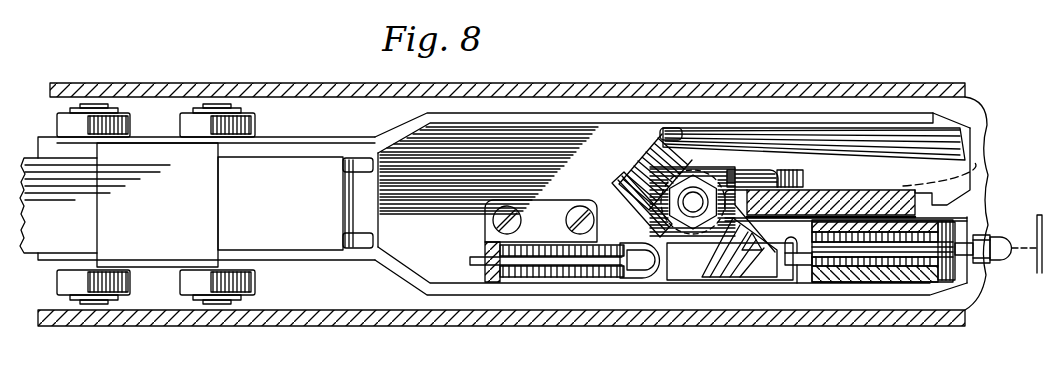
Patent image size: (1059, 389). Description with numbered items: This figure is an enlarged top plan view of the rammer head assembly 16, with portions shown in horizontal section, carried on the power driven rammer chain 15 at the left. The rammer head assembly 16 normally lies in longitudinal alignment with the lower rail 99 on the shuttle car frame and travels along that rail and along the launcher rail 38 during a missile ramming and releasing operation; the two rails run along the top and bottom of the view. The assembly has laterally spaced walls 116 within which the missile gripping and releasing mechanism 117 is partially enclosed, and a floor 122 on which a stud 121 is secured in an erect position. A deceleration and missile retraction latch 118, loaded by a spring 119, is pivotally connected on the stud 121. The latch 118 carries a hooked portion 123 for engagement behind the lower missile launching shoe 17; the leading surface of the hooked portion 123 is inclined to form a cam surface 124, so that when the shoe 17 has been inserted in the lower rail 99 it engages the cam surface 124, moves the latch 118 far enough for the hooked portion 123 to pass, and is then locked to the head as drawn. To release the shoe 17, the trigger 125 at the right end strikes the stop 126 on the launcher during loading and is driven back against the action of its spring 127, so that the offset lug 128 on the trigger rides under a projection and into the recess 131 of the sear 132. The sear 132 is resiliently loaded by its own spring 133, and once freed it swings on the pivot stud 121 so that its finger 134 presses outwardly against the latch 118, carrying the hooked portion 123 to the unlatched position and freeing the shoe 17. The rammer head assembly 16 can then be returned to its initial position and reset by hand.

The launcher rail 38 is at (263, 82).
The lower rail 99 is at (362, 328).
The rammer chain 15 is at (163, 270).
The laterally spaced walls 116 is at (507, 117).
The rammer head assembly 16 is at (658, 300).
The floor 122 is at (527, 182).
The spring 133 is at (570, 273).
The missile gripping and releasing mechanism 117 is at (627, 158).
The spring 119 is at (640, 152).
The stud 121 is at (698, 194).
The deceleration and missile retraction latch 118 is at (825, 174).
The finger 134 is at (748, 178).
The lower missile launching shoe 17 is at (878, 198).
The hooked portion 123 is at (980, 173).
The cam surface 124 is at (960, 200).
The stop 126 is at (1030, 228).
The trigger 125 is at (990, 261).
The spring 127 is at (890, 257).
The offset lug 128 is at (805, 265).
The recess 131 is at (760, 235).
The sear 132 is at (695, 249).